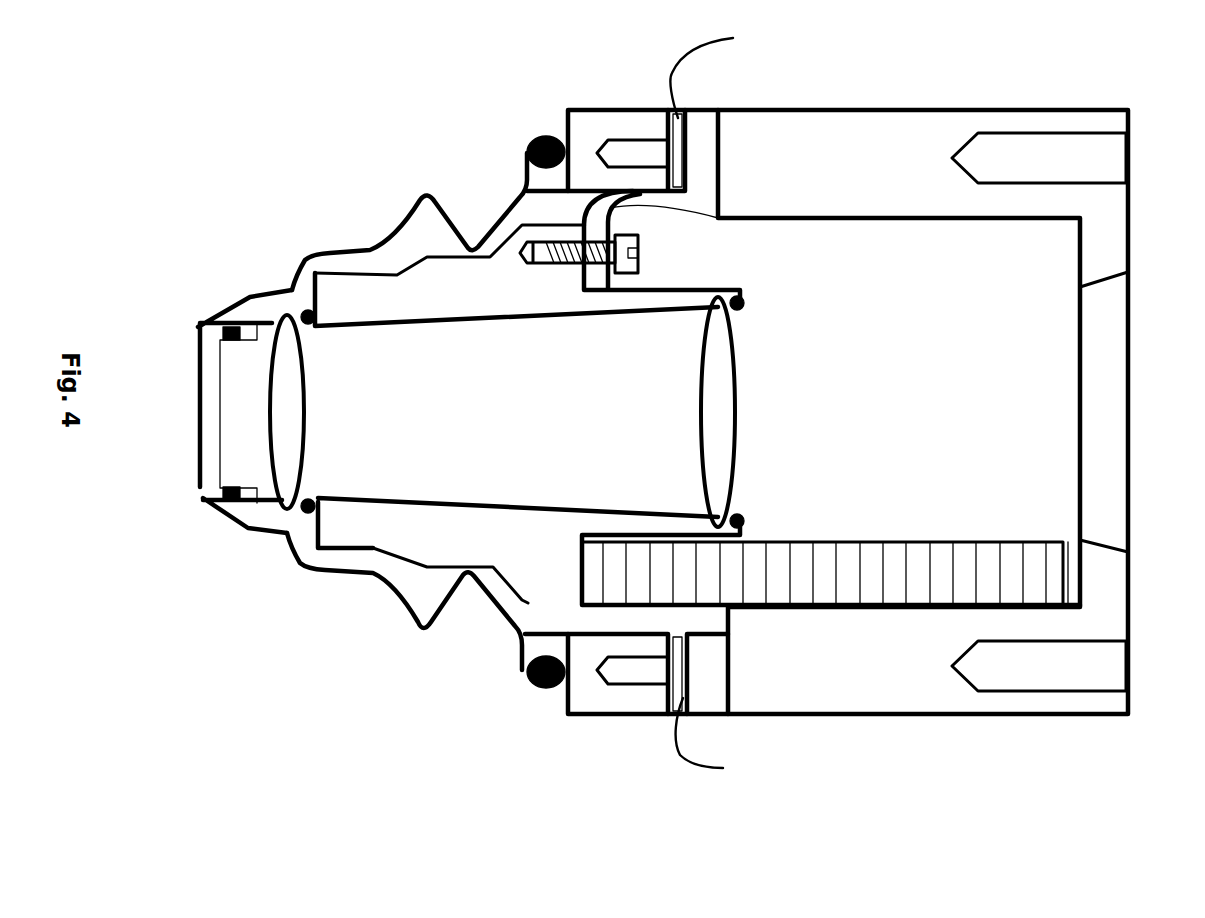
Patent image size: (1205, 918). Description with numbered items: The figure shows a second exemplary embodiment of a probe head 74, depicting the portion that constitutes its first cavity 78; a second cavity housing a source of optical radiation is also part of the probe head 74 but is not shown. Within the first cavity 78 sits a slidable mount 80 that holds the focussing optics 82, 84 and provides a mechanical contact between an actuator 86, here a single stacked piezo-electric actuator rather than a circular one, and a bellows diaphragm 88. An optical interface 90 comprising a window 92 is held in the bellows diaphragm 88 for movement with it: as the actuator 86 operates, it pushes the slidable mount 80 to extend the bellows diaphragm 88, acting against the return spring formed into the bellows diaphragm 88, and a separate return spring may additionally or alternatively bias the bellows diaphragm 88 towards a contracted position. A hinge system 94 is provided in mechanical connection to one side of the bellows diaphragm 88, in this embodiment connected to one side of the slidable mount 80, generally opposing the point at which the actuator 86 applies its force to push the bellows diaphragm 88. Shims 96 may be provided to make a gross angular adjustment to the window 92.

The probe head 74 is at (403, 722).
The first cavity 78 is at (889, 387).
The slidable mount 80 is at (455, 535).
The focussing optics 82 is at (305, 390).
The focussing optics 84 is at (697, 405).
The actuator 86 is at (870, 552).
The bellows diaphragm 88 is at (430, 194).
The optical interface 90 is at (258, 305).
The window 92 is at (205, 450).
The hinge system 94 is at (610, 218).
The shims 96 is at (1080, 542).